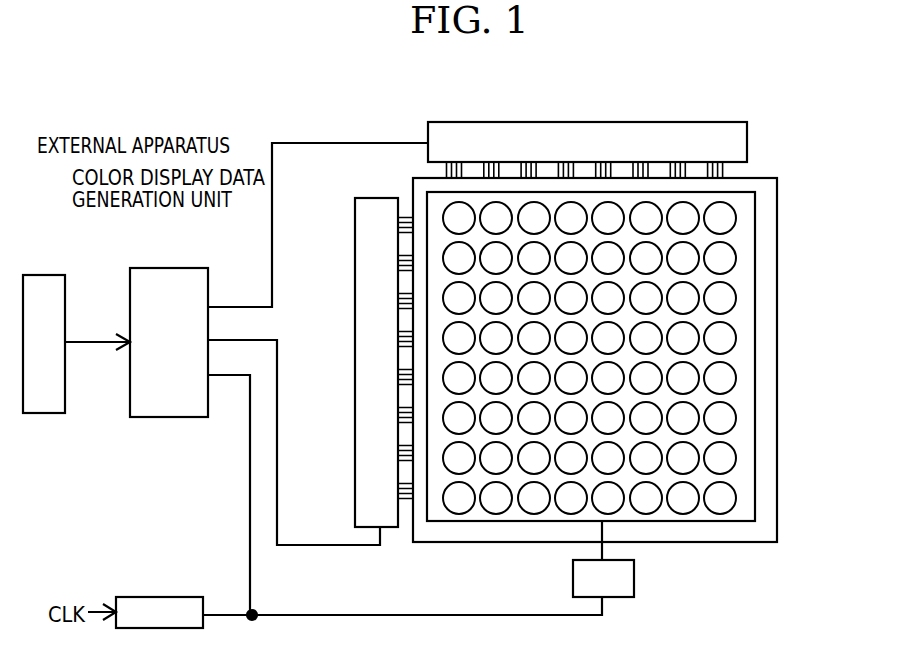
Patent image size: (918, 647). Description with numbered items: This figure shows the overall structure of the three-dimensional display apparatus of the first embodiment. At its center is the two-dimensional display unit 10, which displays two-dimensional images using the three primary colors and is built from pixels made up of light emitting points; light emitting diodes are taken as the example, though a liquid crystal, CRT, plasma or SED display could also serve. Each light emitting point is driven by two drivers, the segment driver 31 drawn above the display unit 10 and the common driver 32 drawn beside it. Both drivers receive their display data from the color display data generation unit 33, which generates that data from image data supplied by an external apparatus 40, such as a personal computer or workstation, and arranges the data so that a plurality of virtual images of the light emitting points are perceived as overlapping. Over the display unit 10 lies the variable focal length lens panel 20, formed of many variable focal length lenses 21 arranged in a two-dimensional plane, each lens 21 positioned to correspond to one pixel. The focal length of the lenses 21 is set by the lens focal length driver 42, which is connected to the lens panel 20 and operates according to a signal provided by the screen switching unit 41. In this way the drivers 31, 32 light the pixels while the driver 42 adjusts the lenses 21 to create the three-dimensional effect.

The two-dimensional display unit 10 is at (767, 203).
The variable focal length lens panel 20 is at (653, 356).
The variable focal length lens 21 is at (722, 300).
The segment driver 31 is at (738, 133).
The common driver 32 is at (380, 508).
The color display data generation unit 33 is at (157, 268).
The external apparatus 40 is at (38, 275).
The screen switching unit 41 is at (162, 602).
The lens focal length driver 42 is at (620, 588).